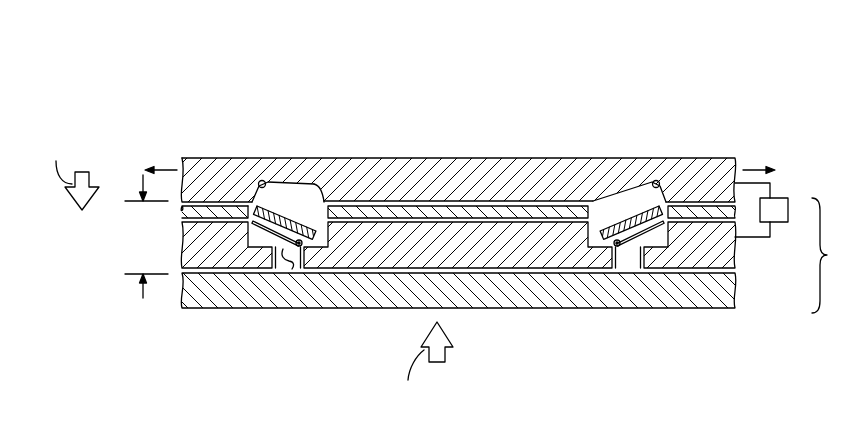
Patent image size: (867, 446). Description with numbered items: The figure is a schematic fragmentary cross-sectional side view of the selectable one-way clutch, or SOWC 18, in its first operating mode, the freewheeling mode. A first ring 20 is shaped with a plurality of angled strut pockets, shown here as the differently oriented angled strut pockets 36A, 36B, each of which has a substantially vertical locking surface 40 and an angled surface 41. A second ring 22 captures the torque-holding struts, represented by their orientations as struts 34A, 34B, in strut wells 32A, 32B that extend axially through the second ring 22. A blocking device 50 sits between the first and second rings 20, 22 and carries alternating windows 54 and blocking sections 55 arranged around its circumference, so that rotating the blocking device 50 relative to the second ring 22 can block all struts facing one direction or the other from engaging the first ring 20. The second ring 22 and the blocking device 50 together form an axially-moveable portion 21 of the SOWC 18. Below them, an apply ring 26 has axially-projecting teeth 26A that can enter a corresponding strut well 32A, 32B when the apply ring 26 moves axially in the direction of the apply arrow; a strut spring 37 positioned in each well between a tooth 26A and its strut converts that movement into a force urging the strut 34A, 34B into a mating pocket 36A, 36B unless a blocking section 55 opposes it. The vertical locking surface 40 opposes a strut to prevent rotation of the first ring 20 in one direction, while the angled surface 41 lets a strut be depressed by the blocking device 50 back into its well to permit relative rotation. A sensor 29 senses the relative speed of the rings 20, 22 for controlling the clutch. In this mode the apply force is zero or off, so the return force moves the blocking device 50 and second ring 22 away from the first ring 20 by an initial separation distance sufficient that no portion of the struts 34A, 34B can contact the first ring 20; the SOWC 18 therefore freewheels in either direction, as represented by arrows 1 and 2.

The selectable one-way clutch (SOWC) 18 is at (151, 80).
The arrow indicating first rotation direction 1 is at (165, 170).
The arrow indicating second rotation direction 2 is at (753, 168).
The first ring 20 is at (718, 176).
The axially-moveable portion 21 is at (518, 243).
The second ring 22 is at (703, 247).
The apply ring 26 is at (693, 293).
The axially-projecting teeth 26A is at (285, 270).
The sensor 29 is at (780, 196).
The strut well 32A is at (322, 254).
The strut well 32B is at (655, 252).
The strut 34A is at (318, 199).
The strut 34B is at (625, 207).
The angled strut pocket 36A is at (297, 216).
The angled strut pocket 36B is at (648, 197).
The strut spring 37 is at (632, 244).
The vertical locking surface 40 is at (260, 181).
The angled surface 41 is at (286, 195).
The blocking device 50 is at (412, 196).
The window 54 is at (326, 210).
The blocking section 55 is at (487, 204).